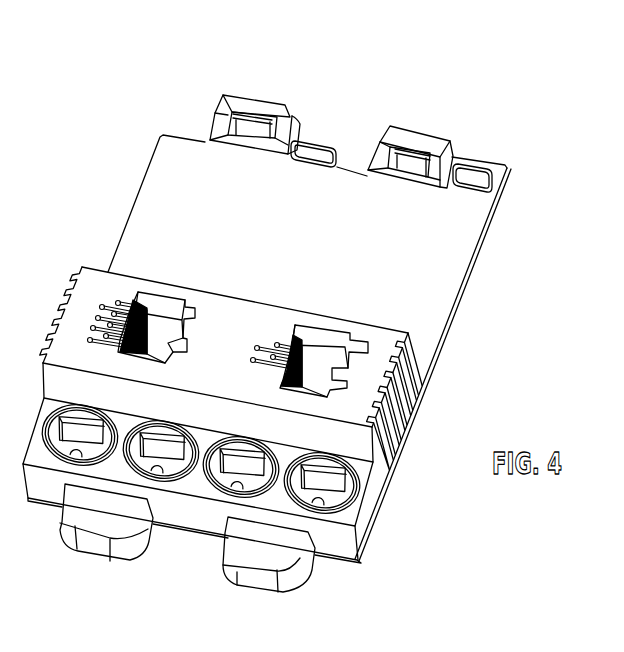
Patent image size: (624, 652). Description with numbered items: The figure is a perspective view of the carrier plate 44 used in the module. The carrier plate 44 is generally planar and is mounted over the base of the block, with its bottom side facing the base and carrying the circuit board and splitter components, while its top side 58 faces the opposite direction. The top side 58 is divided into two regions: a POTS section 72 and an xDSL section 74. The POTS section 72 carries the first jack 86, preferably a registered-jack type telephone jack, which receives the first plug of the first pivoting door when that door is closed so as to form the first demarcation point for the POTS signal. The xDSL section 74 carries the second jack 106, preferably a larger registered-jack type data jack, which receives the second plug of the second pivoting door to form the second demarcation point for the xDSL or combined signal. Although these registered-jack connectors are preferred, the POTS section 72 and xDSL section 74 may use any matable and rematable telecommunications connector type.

The carrier plate 44 is at (455, 304).
The top side 58 is at (447, 257).
The POTS section 72 is at (497, 133).
The xDSL section 74 is at (353, 105).
The first jack 86 is at (327, 343).
The second jack 106 is at (163, 312).